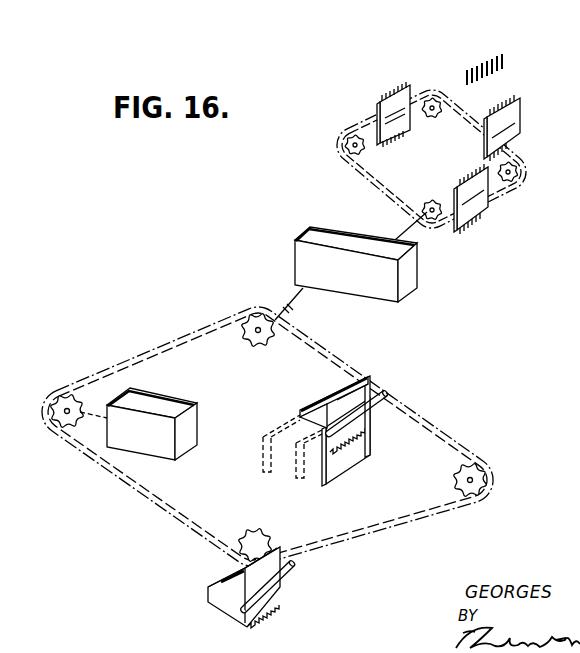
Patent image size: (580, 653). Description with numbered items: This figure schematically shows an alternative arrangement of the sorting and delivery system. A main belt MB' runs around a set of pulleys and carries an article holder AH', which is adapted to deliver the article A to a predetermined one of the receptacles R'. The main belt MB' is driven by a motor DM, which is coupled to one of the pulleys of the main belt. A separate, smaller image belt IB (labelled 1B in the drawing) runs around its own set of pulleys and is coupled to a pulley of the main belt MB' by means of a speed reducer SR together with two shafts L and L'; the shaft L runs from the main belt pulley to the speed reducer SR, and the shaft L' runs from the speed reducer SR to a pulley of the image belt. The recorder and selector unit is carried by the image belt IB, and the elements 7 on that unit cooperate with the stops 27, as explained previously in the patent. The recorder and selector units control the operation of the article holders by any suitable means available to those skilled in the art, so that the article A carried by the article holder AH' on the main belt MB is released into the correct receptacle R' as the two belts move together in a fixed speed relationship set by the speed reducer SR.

The stops 27 is at (505, 41).
The elements 7 is at (523, 92).
The image belt 1B is at (503, 191).
The shaft L' is at (396, 224).
The speed reducer SR is at (414, 265).
The shaft L is at (304, 306).
The belt MB is at (431, 159).
The main belt MB' is at (271, 436).
The motor DM is at (183, 462).
The article A is at (325, 394).
The article holder AH' is at (318, 416).
The receptacles R' is at (334, 442).